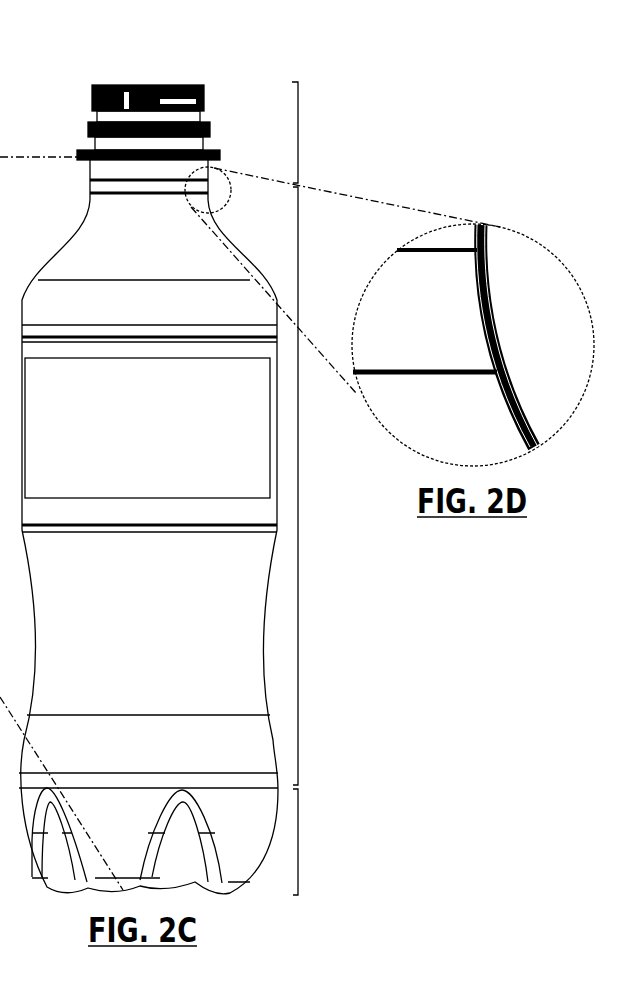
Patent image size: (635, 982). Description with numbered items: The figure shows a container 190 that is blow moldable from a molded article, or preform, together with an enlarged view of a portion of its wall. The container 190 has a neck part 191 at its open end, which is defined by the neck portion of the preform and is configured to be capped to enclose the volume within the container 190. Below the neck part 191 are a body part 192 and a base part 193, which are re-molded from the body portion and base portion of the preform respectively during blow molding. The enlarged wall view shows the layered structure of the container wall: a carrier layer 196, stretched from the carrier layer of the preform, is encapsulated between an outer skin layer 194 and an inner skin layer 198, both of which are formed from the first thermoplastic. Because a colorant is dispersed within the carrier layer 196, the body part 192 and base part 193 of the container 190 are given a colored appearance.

In FIG. 2C, the container 190 is at (240, 72).
In FIG. 2C, the neck part 191 is at (298, 132).
In FIG. 2C, the body part 192 is at (298, 487).
In FIG. 2C, the base part 193 is at (298, 842).
In FIG. 2D, the outer skin layer 194 is at (492, 285).
In FIG. 2D, the carrier layer 196 is at (485, 342).
In FIG. 2D, the inner skin layer 198 is at (473, 297).